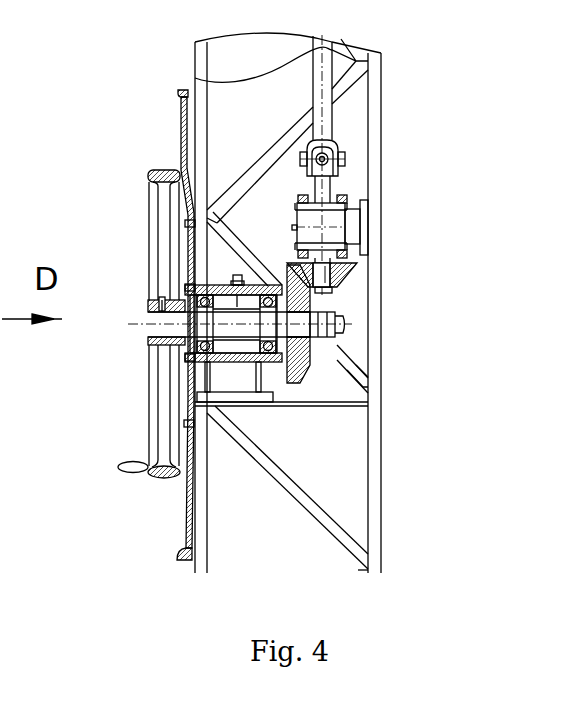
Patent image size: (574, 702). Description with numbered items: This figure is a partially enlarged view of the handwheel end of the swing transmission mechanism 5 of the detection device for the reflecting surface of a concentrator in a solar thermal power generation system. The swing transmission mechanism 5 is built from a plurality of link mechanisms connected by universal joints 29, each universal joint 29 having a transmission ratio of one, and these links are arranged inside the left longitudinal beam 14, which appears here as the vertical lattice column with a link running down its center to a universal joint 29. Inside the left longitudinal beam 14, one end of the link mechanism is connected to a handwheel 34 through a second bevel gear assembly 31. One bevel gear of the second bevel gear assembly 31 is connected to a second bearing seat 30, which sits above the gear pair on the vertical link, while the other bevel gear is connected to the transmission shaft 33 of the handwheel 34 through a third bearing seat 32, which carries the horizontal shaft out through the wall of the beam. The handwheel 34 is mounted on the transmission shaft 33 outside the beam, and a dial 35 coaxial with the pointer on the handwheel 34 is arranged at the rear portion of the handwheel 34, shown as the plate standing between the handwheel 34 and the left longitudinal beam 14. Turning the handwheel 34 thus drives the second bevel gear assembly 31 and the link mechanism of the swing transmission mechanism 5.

The swing transmission mechanism 5 is at (323, 128).
The left longitudinal beam 14 is at (375, 177).
The universal joint 29 is at (338, 157).
The second bearing seat 30 is at (342, 227).
The second bevel gear assembly 31 is at (310, 340).
The third bearing seat 32 is at (247, 362).
The transmission shaft 33 is at (170, 327).
The handwheel 34 is at (158, 407).
The dial 35 is at (185, 495).